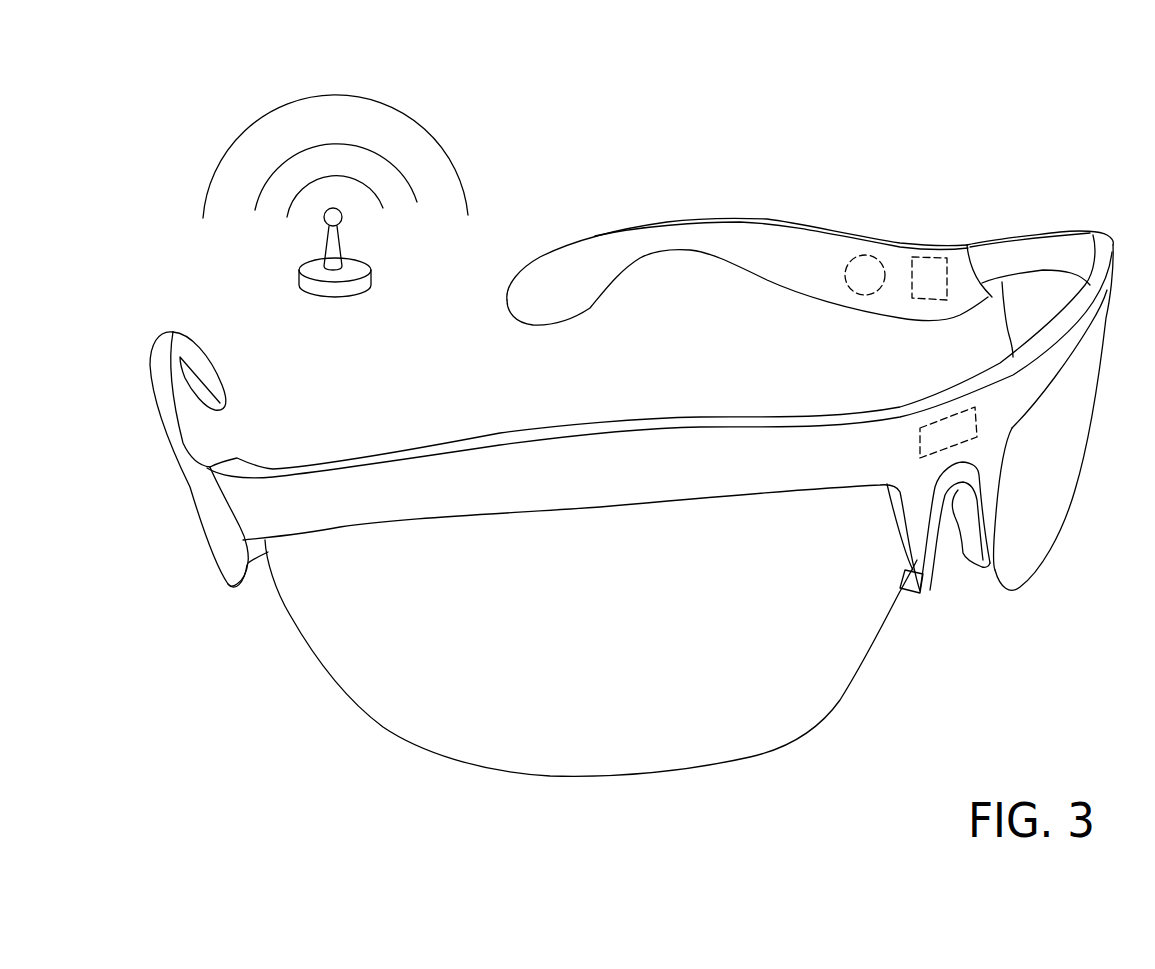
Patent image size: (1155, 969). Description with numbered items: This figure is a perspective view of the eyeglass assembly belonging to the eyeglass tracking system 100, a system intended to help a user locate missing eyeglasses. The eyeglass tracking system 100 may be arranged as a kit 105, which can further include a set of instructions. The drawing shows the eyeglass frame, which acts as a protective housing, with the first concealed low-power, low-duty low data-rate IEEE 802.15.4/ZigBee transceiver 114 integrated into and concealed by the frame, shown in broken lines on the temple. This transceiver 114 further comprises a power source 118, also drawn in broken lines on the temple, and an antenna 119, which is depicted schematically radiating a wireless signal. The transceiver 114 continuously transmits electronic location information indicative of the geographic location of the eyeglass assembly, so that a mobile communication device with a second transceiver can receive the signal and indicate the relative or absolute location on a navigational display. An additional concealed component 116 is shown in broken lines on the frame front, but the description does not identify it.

The eyeglass tracking system 100 is at (992, 132).
The kit 105 is at (1028, 168).
The first concealed low-power, low-duty low data-rate IEEE 802.15.4/ZigBee transceiv 114 is at (928, 247).
The electronic component 116 is at (930, 410).
The power source 118 is at (863, 242).
The antenna 119 is at (350, 288).